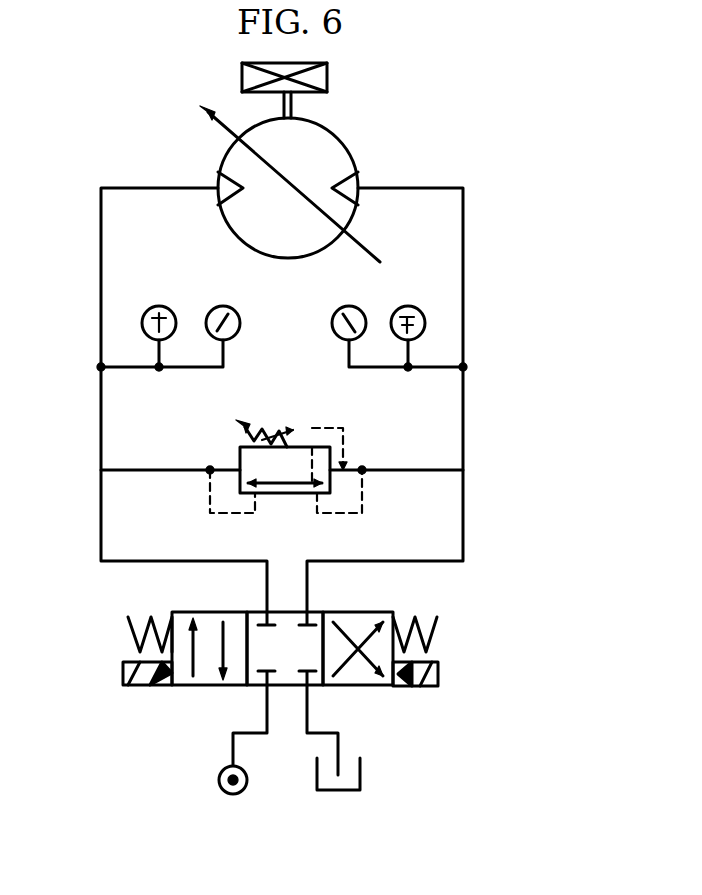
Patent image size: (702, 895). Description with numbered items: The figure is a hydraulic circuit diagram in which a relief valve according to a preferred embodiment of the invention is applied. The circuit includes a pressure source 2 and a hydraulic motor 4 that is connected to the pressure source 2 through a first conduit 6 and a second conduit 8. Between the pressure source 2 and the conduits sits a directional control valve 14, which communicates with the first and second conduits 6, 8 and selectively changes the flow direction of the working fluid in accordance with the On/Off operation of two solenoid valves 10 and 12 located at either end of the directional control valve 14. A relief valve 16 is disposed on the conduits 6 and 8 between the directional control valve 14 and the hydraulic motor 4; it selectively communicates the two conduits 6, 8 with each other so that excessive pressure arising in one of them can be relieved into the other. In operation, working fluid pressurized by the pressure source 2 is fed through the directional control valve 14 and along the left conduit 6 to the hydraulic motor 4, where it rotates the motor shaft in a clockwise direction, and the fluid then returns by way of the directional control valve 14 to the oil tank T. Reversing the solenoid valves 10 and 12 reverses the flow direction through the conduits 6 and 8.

The pressure source 2 is at (218, 786).
The hydraulic motor 4 is at (340, 150).
The first conduit 6 is at (106, 534).
The second conduit 8 is at (464, 508).
The solenoid valve 10 is at (122, 682).
The solenoid valve 12 is at (440, 679).
The directional control valve 14 is at (420, 660).
The relief valve 16 is at (236, 447).
The oil tank T is at (362, 772).